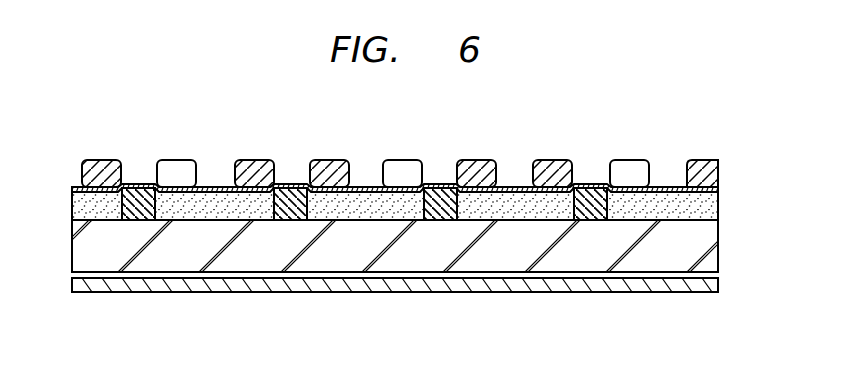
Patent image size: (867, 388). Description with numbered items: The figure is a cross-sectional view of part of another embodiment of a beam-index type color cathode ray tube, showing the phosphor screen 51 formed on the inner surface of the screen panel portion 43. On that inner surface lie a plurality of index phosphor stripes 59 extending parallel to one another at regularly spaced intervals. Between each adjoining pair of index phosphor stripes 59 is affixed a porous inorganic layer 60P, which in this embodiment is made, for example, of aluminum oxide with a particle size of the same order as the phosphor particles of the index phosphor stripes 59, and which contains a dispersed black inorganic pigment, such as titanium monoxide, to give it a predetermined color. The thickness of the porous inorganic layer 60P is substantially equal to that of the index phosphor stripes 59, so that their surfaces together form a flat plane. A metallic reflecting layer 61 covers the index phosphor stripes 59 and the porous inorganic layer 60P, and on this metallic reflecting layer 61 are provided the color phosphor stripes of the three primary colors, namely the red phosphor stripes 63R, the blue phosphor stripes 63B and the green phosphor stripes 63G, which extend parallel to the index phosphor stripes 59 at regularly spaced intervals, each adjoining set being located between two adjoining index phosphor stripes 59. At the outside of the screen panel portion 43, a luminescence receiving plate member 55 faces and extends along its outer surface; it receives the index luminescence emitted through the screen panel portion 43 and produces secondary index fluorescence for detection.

The phosphor screen 51 is at (124, 142).
The screen panel portion 43 is at (718, 246).
The luminescence receiving plate member 55 is at (680, 292).
The index phosphor stripes 59 is at (133, 216).
The porous inorganic layer 60P is at (218, 216).
The metallic reflecting layer 61 is at (659, 187).
The green phosphor stripes 63G is at (173, 170).
The red phosphor stripes 63R is at (250, 170).
The blue phosphor stripes 63B is at (325, 170).